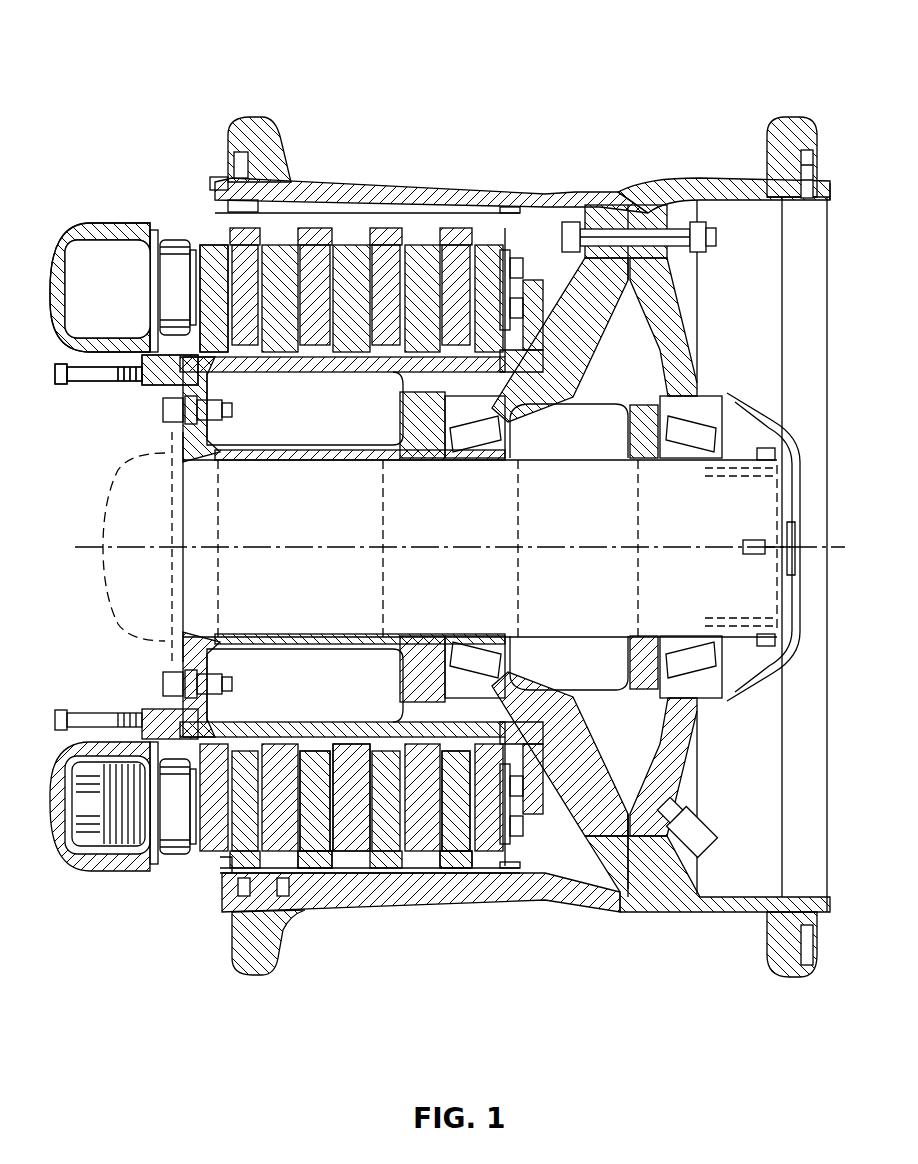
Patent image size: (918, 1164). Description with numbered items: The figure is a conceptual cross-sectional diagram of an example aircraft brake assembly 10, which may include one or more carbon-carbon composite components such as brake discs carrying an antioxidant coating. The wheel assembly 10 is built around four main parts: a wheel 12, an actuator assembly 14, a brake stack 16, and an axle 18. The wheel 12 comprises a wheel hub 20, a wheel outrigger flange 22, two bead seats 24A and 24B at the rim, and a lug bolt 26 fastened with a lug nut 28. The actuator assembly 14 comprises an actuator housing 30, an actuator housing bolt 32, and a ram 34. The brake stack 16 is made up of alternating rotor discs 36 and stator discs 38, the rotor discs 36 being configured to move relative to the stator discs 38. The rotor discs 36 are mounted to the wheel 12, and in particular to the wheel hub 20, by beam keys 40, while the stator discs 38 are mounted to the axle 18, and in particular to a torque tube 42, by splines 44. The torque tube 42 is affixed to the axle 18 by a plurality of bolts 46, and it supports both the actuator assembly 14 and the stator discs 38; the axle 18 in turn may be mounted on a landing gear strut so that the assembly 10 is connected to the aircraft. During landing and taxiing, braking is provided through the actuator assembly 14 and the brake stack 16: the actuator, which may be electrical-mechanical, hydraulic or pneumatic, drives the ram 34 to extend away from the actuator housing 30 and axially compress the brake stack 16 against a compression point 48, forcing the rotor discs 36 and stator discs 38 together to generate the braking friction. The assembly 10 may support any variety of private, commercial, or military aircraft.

The aircraft brake assembly 10 is at (615, 500).
The wheel 12 is at (615, 543).
The actuator assembly 14 is at (104, 288).
The brake stack 16 is at (192, 884).
The axle 18 is at (466, 518).
The wheel hub 20 is at (437, 193).
The wheel outrigger flange 22 is at (698, 183).
The bead seat 24A is at (770, 143).
The bead seat 24B is at (274, 150).
The lug bolt 26 is at (641, 227).
The lug nut 28 is at (710, 236).
The actuator housing 30 is at (50, 283).
The actuator housing bolt 32 is at (62, 384).
The ram 34 is at (204, 245).
The rotor disc 36 is at (313, 868).
The stator disc 38 is at (347, 852).
The beam key 40 is at (483, 870).
The torque tube 42 is at (302, 372).
The spline 44 is at (312, 740).
The bolt 46 is at (163, 686).
The compression point 48 is at (512, 260).